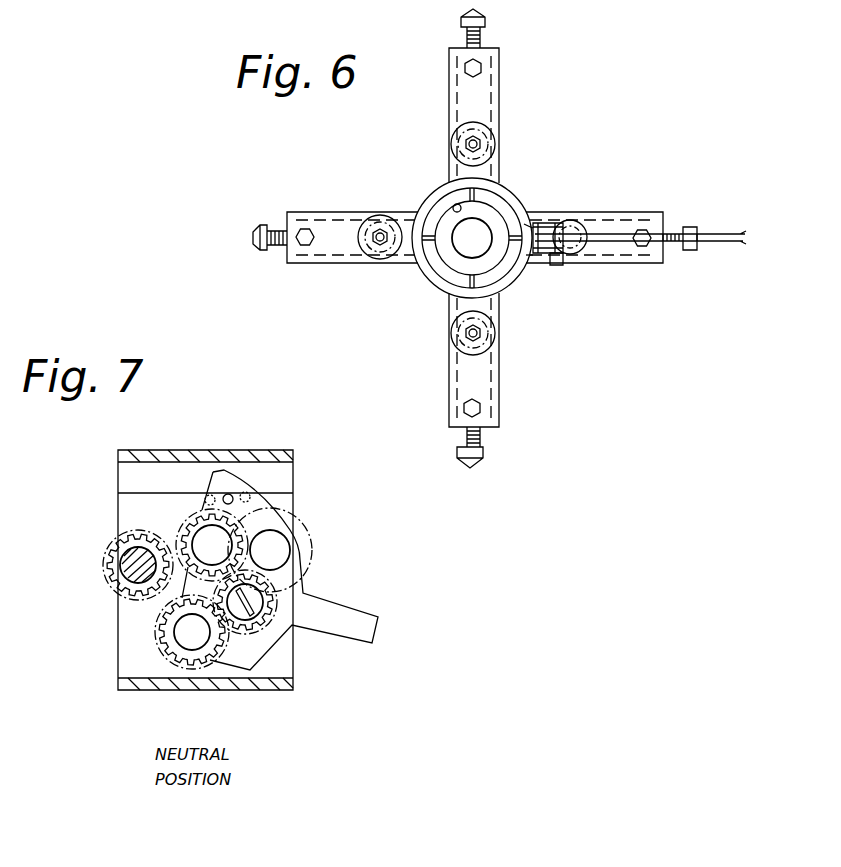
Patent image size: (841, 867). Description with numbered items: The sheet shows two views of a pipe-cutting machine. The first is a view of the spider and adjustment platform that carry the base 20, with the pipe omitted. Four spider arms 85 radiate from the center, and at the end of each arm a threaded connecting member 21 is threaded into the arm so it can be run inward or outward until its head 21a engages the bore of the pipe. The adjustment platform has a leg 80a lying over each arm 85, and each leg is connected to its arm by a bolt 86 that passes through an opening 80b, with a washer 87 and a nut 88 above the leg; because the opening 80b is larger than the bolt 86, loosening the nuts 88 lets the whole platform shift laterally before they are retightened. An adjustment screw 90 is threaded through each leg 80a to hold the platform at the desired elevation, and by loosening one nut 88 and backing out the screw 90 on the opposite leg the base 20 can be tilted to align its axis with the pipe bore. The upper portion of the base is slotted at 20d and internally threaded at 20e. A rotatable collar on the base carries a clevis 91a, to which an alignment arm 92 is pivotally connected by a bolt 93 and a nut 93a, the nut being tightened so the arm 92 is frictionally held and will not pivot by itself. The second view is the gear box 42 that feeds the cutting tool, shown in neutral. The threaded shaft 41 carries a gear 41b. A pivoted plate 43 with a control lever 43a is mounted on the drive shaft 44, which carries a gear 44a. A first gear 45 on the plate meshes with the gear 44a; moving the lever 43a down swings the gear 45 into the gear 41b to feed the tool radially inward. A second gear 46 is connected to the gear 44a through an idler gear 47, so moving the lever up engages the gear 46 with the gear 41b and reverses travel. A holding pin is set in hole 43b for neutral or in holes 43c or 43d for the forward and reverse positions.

In FIG. 6, the base 20 is at (500, 206).
In FIG. 6, the slot of the base 20d is at (488, 198).
In FIG. 6, the internal threads of the base 20e is at (455, 206).
In FIG. 6, the threaded connecting member 21 is at (484, 38).
In FIG. 6, the head of connecting member 21a is at (486, 19).
In FIG. 6, the leg of adjustment platform 80a is at (462, 97).
In FIG. 6, the opening in leg 80b is at (380, 262).
In FIG. 6, the spider arm 85 is at (498, 86).
In FIG. 6, the bolt 86 is at (378, 231).
In FIG. 6, the washer 87 is at (458, 156).
In FIG. 6, the nut 88 is at (456, 140).
In FIG. 6, the adjustment screw 90 is at (481, 67).
In FIG. 6, the clevis 91a is at (531, 262).
In FIG. 6, the alignment arm 92 is at (582, 230).
In FIG. 6, the bolt 93 is at (545, 224).
In FIG. 6, the nut 93a is at (570, 258).
In FIG. 7, the threaded shaft 41 is at (124, 574).
In FIG. 7, the gear on threaded shaft 41b is at (106, 560).
In FIG. 7, the gear box 42 is at (116, 513).
In FIG. 7, the pivoted plate 43 is at (300, 573).
In FIG. 7, the control lever 43a is at (350, 612).
In FIG. 7, the hole for neutral position 43b is at (228, 494).
In FIG. 7, the hole for forward or reverse position 43c is at (207, 494).
In FIG. 7, the hole for forward or reverse position 43d is at (249, 493).
In FIG. 7, the drive shaft 44 is at (256, 606).
In FIG. 7, the gear on drive shaft 44a is at (262, 628).
In FIG. 7, the first gear 45 is at (168, 640).
In FIG. 7, the second gear 46 is at (197, 520).
In FIG. 7, the idler gear 47 is at (292, 540).